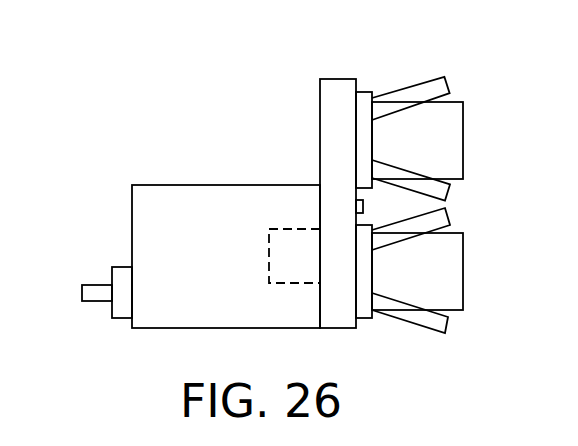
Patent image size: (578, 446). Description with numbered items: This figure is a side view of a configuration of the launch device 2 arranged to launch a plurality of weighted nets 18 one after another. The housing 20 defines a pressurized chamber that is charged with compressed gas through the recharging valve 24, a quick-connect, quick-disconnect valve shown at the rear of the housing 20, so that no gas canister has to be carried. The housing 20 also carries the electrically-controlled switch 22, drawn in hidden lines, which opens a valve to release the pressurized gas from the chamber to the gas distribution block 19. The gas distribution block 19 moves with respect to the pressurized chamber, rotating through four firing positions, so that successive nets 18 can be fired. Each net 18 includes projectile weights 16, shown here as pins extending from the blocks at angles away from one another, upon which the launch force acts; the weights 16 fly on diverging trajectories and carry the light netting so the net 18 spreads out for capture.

The launch device 2 is at (106, 113).
The projectile weights 16 is at (427, 90).
The weighted net 18 is at (453, 135).
The gas distribution block 19 is at (327, 102).
The housing 20 is at (209, 198).
The electrically-controlled switch 22 is at (293, 240).
The recharging valve 24 is at (90, 292).